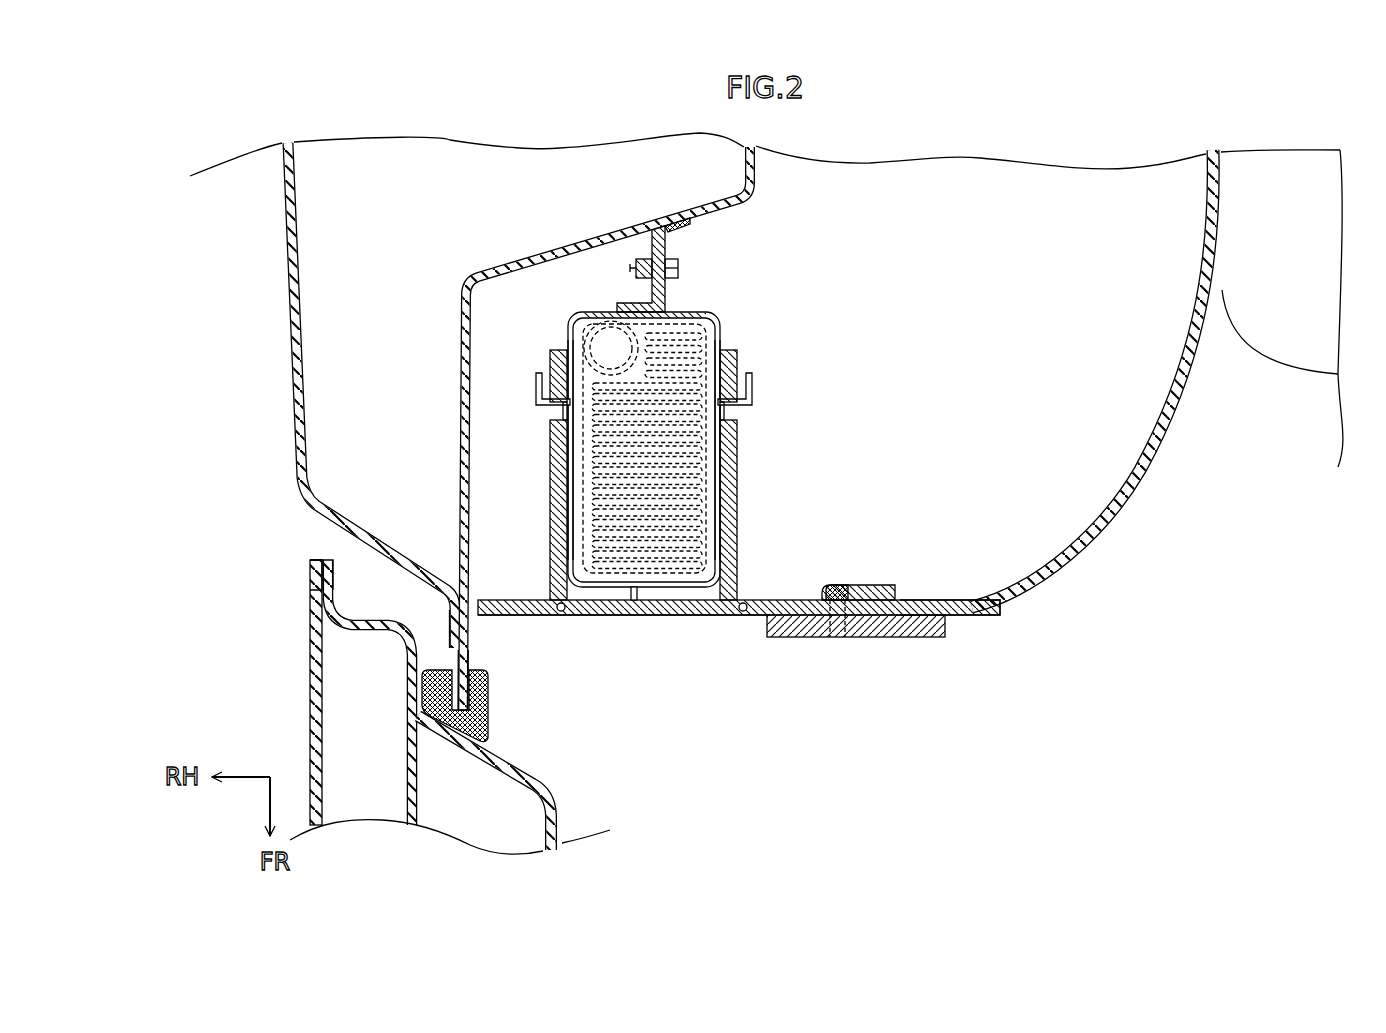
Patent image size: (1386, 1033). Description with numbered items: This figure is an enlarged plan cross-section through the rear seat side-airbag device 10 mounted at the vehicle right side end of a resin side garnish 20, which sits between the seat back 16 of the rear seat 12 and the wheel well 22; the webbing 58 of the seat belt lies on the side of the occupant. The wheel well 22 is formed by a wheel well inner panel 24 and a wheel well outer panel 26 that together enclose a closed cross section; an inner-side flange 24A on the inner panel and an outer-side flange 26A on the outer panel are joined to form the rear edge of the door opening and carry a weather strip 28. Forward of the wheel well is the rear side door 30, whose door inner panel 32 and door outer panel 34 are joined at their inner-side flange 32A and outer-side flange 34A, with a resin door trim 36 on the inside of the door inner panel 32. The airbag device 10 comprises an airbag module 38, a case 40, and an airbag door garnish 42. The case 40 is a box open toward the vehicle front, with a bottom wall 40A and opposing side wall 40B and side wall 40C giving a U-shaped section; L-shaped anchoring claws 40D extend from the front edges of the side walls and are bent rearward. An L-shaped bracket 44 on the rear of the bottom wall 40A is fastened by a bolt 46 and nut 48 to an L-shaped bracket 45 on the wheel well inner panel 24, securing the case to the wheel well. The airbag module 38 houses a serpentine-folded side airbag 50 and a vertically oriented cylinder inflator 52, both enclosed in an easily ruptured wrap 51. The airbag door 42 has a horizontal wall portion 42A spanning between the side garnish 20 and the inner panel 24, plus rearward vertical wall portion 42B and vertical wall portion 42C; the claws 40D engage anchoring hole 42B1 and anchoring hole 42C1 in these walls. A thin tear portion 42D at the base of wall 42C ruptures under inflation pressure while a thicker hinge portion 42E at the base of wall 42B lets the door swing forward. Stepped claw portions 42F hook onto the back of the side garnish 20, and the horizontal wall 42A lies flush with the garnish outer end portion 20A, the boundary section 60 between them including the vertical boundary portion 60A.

The rear seat side-airbag device 10 is at (812, 280).
The rear seat 12 is at (766, 300).
The seat back 16 is at (1296, 360).
The side garnish 20 is at (1125, 500).
The vehicle right side outer end portion of the side garnish 20A is at (898, 604).
The wheel well 22 is at (213, 250).
The wheel well inner panel 24 is at (456, 313).
The inner-side flange 24A is at (471, 665).
The wheel well outer panel 26 is at (290, 325).
The outer-side flange 26A is at (452, 642).
The weather strip 28 is at (490, 698).
The rear side door 30 is at (213, 646).
The door inner panel 32 is at (401, 735).
The inner-side flange 32A is at (324, 560).
The door outer panel 34 is at (303, 747).
The outer-side flange 34A is at (307, 580).
The door trim 36 is at (567, 817).
The airbag module 38 is at (678, 618).
The case 40 is at (584, 310).
The bottom wall 40A is at (702, 312).
The side wall 40B is at (565, 343).
The side wall 40C is at (723, 340).
The anchoring claws 40D is at (540, 389).
The airbag door garnish 42 is at (690, 608).
The horizontal wall portion 42A is at (609, 614).
The vertical wall portion 42B is at (544, 547).
The anchoring hole 42B1 is at (552, 415).
The vertical wall portion 42C is at (743, 527).
The anchoring hole 42C1 is at (736, 424).
The tear portion 42D is at (714, 607).
The hinge portion 42E is at (591, 614).
The claw portions 42F is at (853, 586).
The L-shaped bracket 44 is at (624, 302).
The L-shaped bracket 45 is at (686, 219).
The bolt 46 is at (681, 268).
The nut 48 is at (641, 258).
The side airbag 50 is at (709, 466).
The wrap 51 is at (634, 601).
The inflator 52 is at (577, 324).
The webbing 58 is at (928, 638).
The boundary section 60 is at (837, 618).
The vertical boundary portion 60A is at (834, 611).